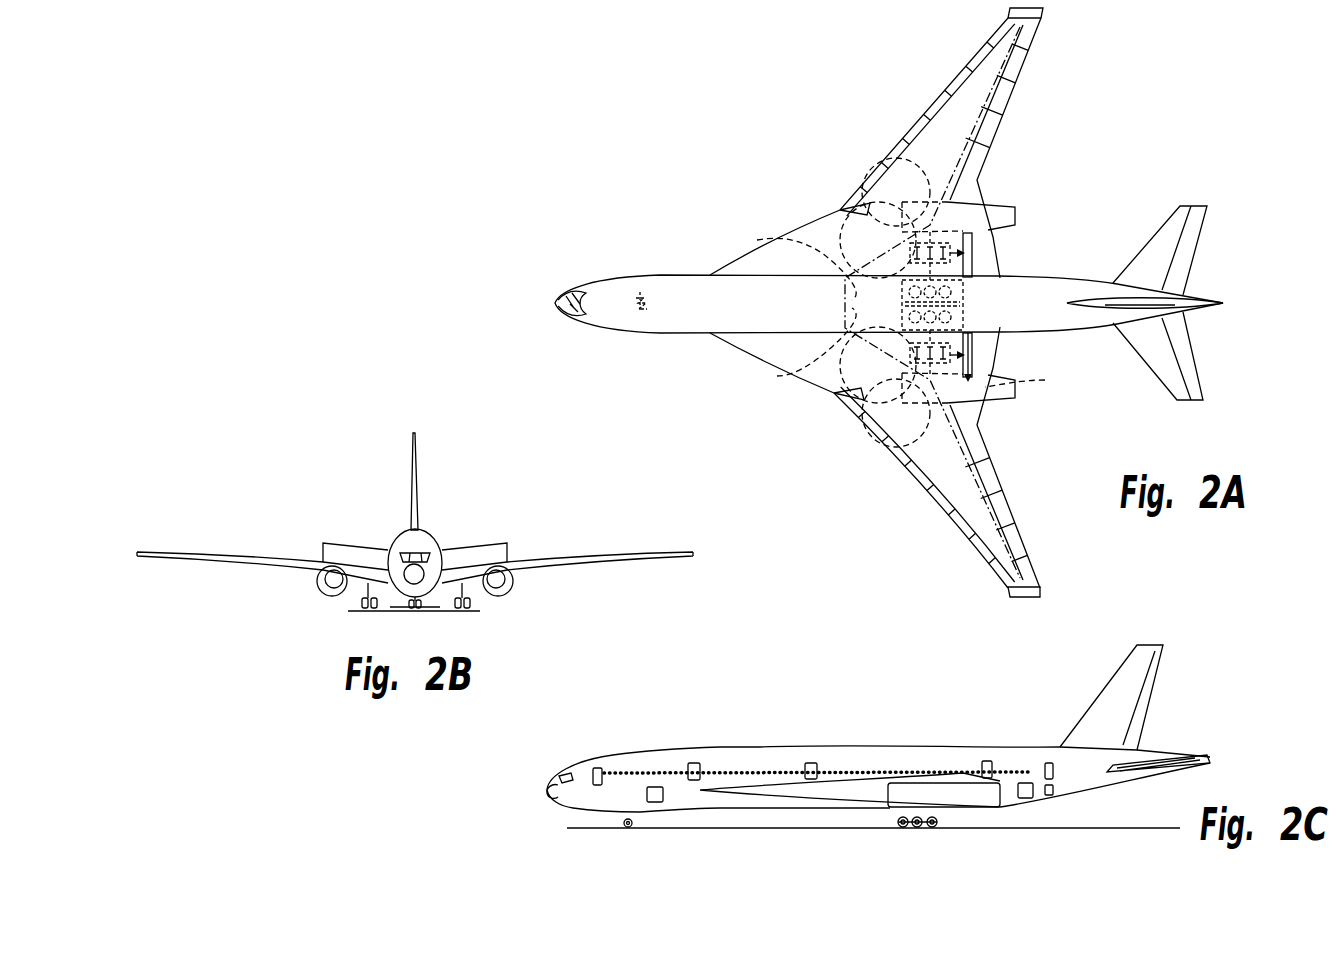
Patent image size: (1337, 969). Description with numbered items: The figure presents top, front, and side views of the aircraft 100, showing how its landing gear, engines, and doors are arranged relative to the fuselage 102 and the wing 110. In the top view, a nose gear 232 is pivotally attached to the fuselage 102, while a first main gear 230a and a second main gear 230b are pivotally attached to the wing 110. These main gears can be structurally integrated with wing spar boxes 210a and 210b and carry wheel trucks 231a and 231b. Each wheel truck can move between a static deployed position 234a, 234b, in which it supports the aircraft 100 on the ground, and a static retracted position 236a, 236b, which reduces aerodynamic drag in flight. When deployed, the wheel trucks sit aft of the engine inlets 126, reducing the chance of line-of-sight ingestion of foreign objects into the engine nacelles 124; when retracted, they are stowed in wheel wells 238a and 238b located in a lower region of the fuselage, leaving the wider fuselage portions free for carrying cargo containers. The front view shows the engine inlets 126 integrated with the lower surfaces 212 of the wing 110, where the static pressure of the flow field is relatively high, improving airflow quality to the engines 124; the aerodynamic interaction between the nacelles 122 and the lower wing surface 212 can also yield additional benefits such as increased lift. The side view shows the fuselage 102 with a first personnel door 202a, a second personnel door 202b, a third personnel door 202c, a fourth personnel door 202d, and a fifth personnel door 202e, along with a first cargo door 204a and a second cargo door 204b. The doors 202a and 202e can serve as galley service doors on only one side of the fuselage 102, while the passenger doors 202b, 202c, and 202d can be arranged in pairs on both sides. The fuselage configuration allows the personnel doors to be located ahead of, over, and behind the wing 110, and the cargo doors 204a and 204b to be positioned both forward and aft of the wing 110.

In FIG. 2A, the aircraft 100 is at (660, 196).
In FIG. 2B, the aircraft 100 is at (328, 480).
In FIG. 2C, the aircraft 100 is at (522, 775).
In FIG. 2A, the fuselage 102 is at (606, 282).
In FIG. 2C, the fuselage 102 is at (549, 805).
In FIG. 2A, the wing 110 is at (1045, 592).
In FIG. 2B, the wing 110 is at (653, 551).
In FIG. 2C, the wing 110 is at (887, 772).
In FIG. 2B, the nacelles 122 is at (318, 573).
In FIG. 2A, the engine nacelles 124 is at (906, 148).
In FIG. 2B, the engine nacelles 124 is at (327, 566).
In FIG. 2A, the engine inlets 126 is at (905, 440).
In FIG. 2B, the engine inlets 126 is at (332, 597).
In FIG. 2C, the first personnel door 202a is at (596, 768).
In FIG. 2C, the second personnel door 202b is at (694, 762).
In FIG. 2C, the third personnel door 202c is at (812, 762).
In FIG. 2C, the fourth personnel door 202d is at (987, 760).
In FIG. 2C, the fifth personnel door 202e is at (1055, 773).
In FIG. 2C, the first cargo door 204a is at (657, 803).
In FIG. 2C, the second cargo door 204b is at (1026, 800).
In FIG. 2A, the wing spar box 210a is at (985, 420).
In FIG. 2A, the wing spar box 210b is at (985, 208).
In FIG. 2B, the lower surfaces of the wing 212 is at (196, 560).
In FIG. 2A, the first main gear 230a is at (972, 357).
In FIG. 2A, the second main gear 230b is at (966, 262).
In FIG. 2A, the wheel truck 231a is at (1000, 408).
In FIG. 2A, the wheel truck 231b is at (1000, 230).
In FIG. 2A, the nose gear 232 is at (641, 312).
In FIG. 2A, the static deployed position 234a is at (878, 438).
In FIG. 2A, the static deployed position 234b is at (862, 205).
In FIG. 2A, the static retracted position 236a is at (838, 408).
In FIG. 2A, the static retracted position 236b is at (836, 208).
In FIG. 2A, the wheel well 238a is at (792, 349).
In FIG. 2A, the wheel well 238b is at (784, 265).